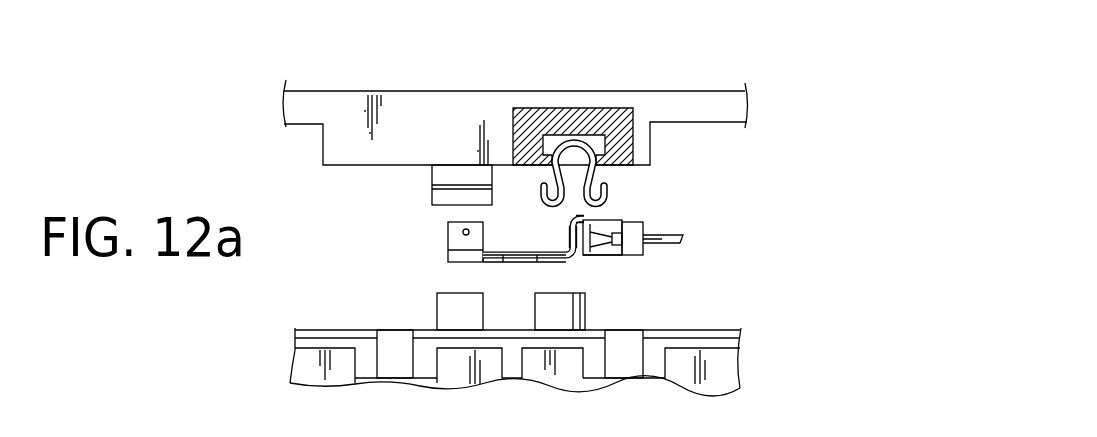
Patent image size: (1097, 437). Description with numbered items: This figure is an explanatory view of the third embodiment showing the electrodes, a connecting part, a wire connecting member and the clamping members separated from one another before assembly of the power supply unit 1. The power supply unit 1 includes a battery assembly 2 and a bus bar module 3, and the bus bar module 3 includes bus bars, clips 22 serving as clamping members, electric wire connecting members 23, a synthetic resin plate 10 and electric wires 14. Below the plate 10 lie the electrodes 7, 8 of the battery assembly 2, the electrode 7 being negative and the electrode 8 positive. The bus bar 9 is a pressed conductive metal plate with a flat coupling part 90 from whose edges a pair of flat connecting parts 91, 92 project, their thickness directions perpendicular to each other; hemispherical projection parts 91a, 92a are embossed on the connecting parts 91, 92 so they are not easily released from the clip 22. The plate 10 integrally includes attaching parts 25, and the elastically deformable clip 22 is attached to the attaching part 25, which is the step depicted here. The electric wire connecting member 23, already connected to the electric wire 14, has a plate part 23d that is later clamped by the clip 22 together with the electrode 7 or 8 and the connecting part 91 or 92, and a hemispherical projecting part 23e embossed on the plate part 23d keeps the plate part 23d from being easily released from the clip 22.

The power supply unit 1 is at (837, 0).
The battery assembly 2 is at (718, 331).
The bus bar module 3 is at (764, 31).
The electrode 7 is at (437, 305).
The electrode 8 is at (582, 312).
The bus bar 9 is at (491, 255).
The plate 10 is at (555, 100).
The electric wire 14 is at (662, 235).
The clip 22 is at (424, 167).
The electric wire connecting member 23 is at (632, 221).
The plate part 23d is at (604, 257).
The projecting part 23e is at (644, 248).
The attaching part 25 is at (548, 130).
The coupling part 90 is at (513, 256).
The connecting part 91 is at (557, 250).
The projection part 91a is at (620, 216).
The connecting part 92 is at (448, 249).
The projection part 92a is at (462, 232).